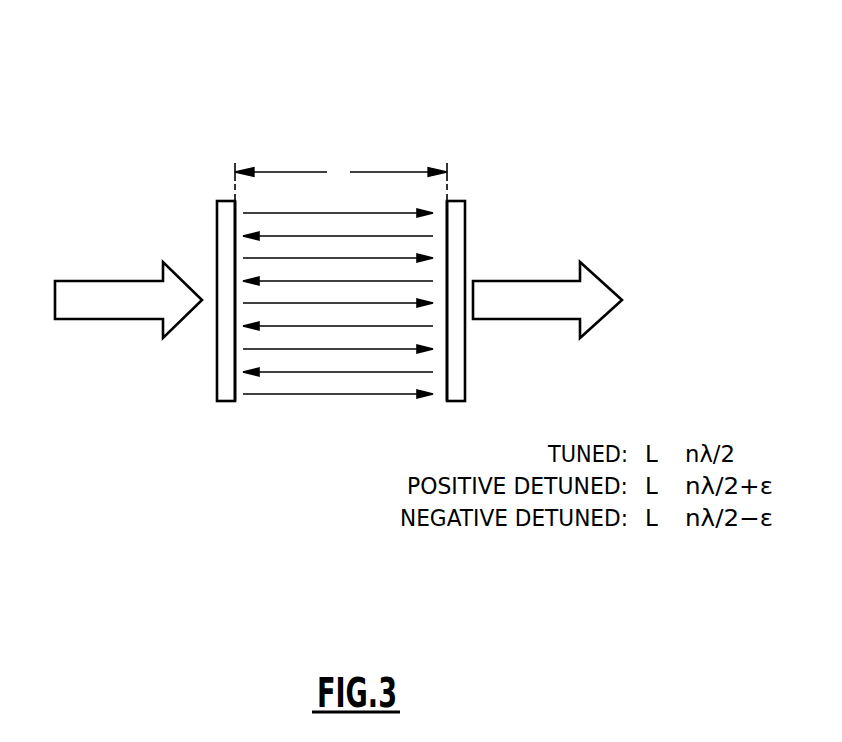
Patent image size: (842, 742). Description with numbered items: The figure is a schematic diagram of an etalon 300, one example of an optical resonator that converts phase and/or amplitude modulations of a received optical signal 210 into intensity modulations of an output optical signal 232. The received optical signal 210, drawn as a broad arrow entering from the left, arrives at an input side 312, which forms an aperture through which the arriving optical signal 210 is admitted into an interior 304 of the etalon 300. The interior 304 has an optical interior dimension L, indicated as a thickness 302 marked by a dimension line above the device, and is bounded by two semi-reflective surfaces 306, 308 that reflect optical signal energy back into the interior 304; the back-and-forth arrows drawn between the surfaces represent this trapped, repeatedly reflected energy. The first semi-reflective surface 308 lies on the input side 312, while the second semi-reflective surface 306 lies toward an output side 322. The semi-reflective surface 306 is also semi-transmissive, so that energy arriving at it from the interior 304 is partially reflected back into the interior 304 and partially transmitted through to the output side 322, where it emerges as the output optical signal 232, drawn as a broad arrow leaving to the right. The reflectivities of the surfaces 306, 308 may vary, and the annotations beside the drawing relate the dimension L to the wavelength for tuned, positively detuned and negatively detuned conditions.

The etalon 300 is at (446, 55).
The thickness 302 is at (296, 172).
The interior 304 is at (343, 414).
The semi-reflective surface 306 is at (434, 414).
The semi-reflective surface 308 is at (245, 414).
The input side 312 is at (209, 234).
The output side 322 is at (473, 234).
The optical signal 210 is at (104, 281).
The output optical signal 232 is at (518, 281).